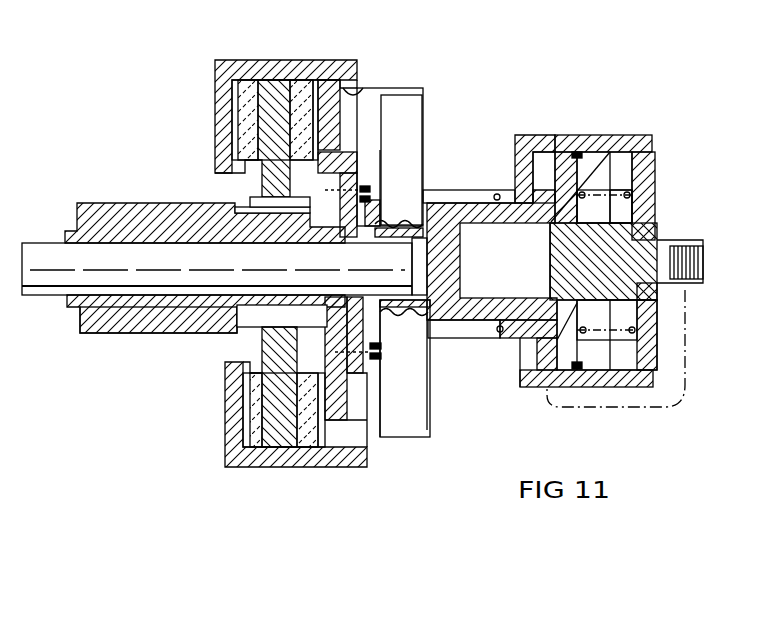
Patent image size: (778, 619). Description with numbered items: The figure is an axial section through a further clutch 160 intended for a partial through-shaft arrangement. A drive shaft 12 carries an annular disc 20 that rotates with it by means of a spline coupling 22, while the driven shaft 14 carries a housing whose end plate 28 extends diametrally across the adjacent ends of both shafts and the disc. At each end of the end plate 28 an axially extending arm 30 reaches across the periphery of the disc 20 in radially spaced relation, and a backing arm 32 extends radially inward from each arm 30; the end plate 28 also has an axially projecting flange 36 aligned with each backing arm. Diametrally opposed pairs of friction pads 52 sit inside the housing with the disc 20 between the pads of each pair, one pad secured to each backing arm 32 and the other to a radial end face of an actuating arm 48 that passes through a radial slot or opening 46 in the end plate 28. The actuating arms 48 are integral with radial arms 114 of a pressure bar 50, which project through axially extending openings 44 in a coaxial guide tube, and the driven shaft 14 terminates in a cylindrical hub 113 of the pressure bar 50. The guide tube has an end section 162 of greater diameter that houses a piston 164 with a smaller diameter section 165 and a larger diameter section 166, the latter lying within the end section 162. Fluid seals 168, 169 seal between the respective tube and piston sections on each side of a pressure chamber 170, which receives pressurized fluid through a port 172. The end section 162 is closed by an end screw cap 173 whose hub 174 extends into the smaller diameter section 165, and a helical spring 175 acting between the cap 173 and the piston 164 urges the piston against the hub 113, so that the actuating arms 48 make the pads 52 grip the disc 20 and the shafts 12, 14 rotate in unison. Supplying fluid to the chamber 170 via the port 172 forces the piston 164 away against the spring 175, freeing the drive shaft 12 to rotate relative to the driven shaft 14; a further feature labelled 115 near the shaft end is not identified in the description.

The drive shaft 12 is at (102, 212).
The driven shaft 14 is at (40, 256).
The annular disc 20 is at (290, 452).
The spline coupling 22 is at (240, 336).
The end plate 28 is at (355, 376).
The axially extending arm 30 is at (262, 58).
The backing arm 32 is at (220, 115).
The axially projecting flange 36 is at (262, 184).
The openings 44 is at (443, 334).
The opening 46 is at (360, 96).
The actuating arm 48 is at (400, 108).
The pressure bar 50 is at (392, 148).
The friction pads 52 is at (255, 420).
The cylindrical hub 113 is at (410, 340).
The radial arms 114 is at (428, 312).
The shaft end collar 115 is at (413, 253).
The clutch 160 is at (172, 411).
The end section 162 is at (612, 142).
The piston 164 is at (462, 251).
The smaller diameter section 165 is at (488, 308).
The larger diameter section 166 is at (587, 170).
The fluid seal 168 is at (500, 334).
The fluid seal 169 is at (577, 150).
The pressure chamber 170 is at (547, 170).
The port 172 is at (543, 388).
The end screw cap 173 is at (643, 208).
The hub 174 is at (587, 250).
The helical spring 175 is at (680, 323).